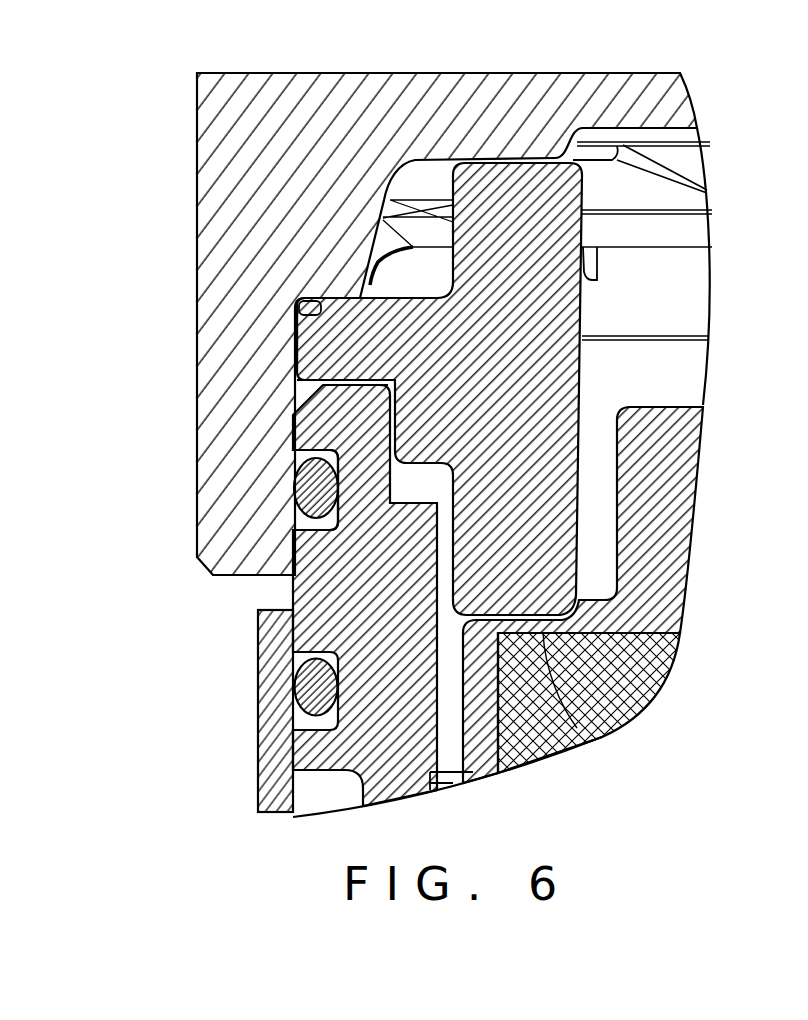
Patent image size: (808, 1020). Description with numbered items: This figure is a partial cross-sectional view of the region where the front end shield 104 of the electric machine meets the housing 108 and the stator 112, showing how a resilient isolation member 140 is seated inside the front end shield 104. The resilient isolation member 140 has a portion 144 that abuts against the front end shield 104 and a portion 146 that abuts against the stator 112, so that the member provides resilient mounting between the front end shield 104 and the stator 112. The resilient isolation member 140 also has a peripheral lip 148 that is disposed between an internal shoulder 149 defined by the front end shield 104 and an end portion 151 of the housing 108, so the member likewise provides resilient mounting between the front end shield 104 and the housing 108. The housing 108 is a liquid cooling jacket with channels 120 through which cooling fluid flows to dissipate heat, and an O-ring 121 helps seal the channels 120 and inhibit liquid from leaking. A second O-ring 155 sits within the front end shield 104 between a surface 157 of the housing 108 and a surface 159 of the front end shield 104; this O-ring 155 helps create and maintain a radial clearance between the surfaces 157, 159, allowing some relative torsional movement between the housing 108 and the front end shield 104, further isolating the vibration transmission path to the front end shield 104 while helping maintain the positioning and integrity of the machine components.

The front end shield 104 is at (196, 138).
The portion 144 is at (520, 157).
The peripheral lip 148 is at (293, 335).
The internal shoulder 149 is at (298, 318).
The end portion 151 is at (347, 385).
The surface 159 is at (293, 455).
The O-ring 155 is at (293, 488).
The surface 157 is at (333, 517).
The O-ring 121 is at (297, 676).
The housing 108 is at (260, 738).
The channels 120 is at (323, 813).
The stator 112 is at (463, 707).
The resilient isolation member 140 is at (583, 370).
The portion 146 is at (600, 732).